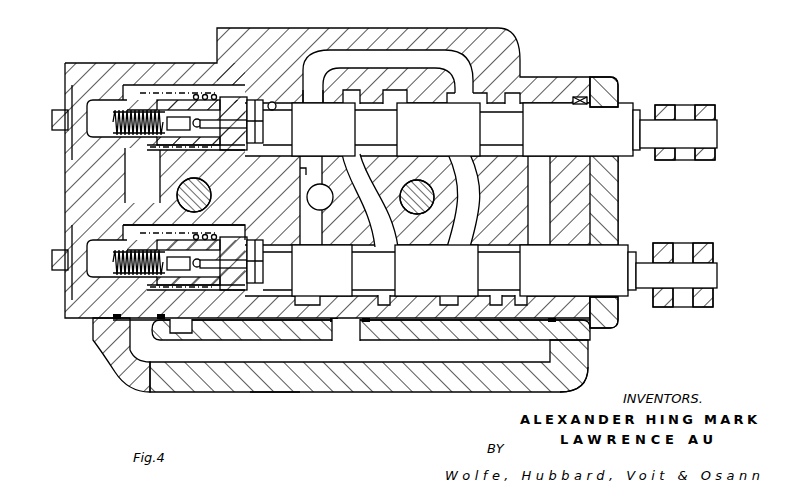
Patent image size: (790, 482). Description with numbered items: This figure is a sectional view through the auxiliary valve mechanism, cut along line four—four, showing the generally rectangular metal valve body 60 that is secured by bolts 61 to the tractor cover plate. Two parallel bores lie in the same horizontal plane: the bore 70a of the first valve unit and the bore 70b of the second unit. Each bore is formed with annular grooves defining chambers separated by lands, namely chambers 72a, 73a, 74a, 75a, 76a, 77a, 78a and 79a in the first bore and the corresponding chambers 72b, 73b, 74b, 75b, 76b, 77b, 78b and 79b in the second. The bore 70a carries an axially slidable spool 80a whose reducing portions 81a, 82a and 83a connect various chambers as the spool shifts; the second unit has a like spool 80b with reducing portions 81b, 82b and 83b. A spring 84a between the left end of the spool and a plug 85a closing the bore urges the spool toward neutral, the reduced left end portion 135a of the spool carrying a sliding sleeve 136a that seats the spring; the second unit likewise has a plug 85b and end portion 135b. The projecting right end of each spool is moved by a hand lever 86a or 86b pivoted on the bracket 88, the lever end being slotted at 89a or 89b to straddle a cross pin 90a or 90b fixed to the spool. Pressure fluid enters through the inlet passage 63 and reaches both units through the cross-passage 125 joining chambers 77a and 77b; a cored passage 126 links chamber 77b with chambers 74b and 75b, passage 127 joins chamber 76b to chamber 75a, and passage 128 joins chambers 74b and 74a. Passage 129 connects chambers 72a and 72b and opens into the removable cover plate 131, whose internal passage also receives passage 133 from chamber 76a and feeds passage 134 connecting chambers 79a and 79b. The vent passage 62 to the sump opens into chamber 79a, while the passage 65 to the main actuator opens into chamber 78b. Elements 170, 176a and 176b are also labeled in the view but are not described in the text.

The valve body 60 is at (505, 40).
The bolts 61 is at (177, 192).
The vent passage 62 is at (176, 335).
The inlet passage 63 is at (306, 194).
The third passage 65 is at (275, 102).
The bore 70a is at (603, 330).
The bore 70b is at (600, 80).
The valve chamber 72a is at (573, 363).
The valve chamber 72b is at (580, 97).
The valve chamber 73a is at (493, 340).
The port 73b is at (513, 93).
The valve chamber 74a is at (452, 333).
The valve chamber 74b is at (447, 72).
The valve chamber 75a is at (392, 333).
The valve chamber 75b is at (395, 92).
The valve chamber 76a is at (346, 240).
The valve chamber 76b is at (352, 90).
The valve chamber 77a is at (303, 330).
The valve chamber 77b is at (316, 90).
The valve chamber 78a is at (268, 301).
The valve chamber 78b is at (255, 100).
The valve chamber 79a is at (182, 300).
The valve chamber 79b is at (175, 100).
The valve spool 80a is at (627, 307).
The spool stem 80b is at (622, 117).
The reducing portion 81a is at (505, 268).
The spool land 81b is at (508, 128).
The reducing portion 82a is at (380, 263).
The spool land 82b is at (383, 123).
The reducing portion 83a is at (280, 262).
The spool land 83b is at (295, 117).
The spring 84a is at (136, 219).
The plug 85a is at (40, 273).
The plug 85b is at (62, 115).
The hand lever 86a is at (717, 305).
The shaft end 86b is at (717, 107).
The bracket 88 is at (603, 205).
The slot 89a is at (687, 308).
The retainer 89b is at (683, 161).
The cross pin 90a is at (687, 253).
The bearing 90b is at (690, 108).
The cross-passage 125 is at (303, 170).
The passage 126 is at (358, 50).
The passage 127 is at (348, 158).
The passage 128 is at (455, 170).
The passage 129 is at (548, 167).
The cover plate 131 is at (263, 385).
The passage 133 is at (352, 322).
The passage 134 is at (128, 172).
The left end portion of spool 135a is at (160, 305).
The plug 135b is at (225, 97).
The sliding sleeve 136a is at (135, 365).
The cover plate 170 is at (385, 360).
The spring 176a is at (139, 330).
The spring 176b is at (153, 103).